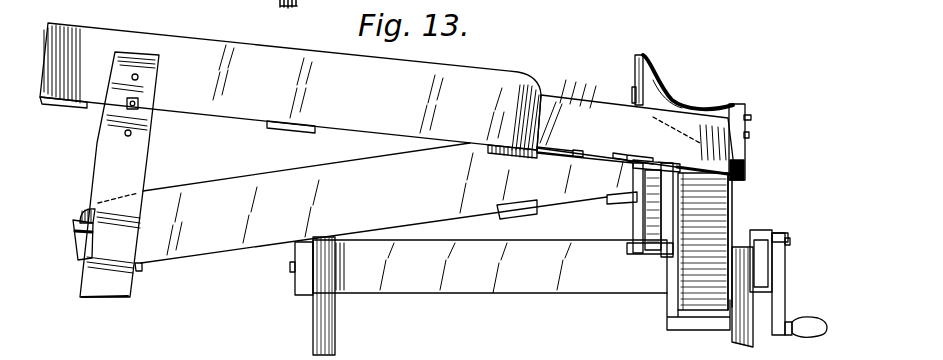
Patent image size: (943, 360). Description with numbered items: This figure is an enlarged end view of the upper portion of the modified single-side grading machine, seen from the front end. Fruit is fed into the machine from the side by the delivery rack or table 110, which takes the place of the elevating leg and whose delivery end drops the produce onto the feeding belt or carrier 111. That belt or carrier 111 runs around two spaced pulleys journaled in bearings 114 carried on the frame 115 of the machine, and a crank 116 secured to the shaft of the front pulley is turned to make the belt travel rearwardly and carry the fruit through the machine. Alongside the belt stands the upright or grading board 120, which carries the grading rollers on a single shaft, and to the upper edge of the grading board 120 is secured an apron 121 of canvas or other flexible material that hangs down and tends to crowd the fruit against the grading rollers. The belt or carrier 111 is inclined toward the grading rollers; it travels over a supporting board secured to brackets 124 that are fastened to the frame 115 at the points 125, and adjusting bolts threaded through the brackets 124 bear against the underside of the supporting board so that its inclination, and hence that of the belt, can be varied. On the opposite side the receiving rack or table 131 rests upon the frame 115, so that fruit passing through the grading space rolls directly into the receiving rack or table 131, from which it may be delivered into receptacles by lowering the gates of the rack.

The delivery rack or table 110 is at (348, 100).
The receiving rack or table 131 is at (460, 193).
The frame 115 is at (335, 295).
The upright or grading board 120 is at (640, 77).
The apron 121 is at (662, 75).
The feeding belt or carrier 111 is at (715, 186).
The brackets 124 is at (677, 197).
The fastening of brackets to frame 125 is at (677, 214).
The bearings 114 is at (768, 232).
The crank 116 is at (783, 283).